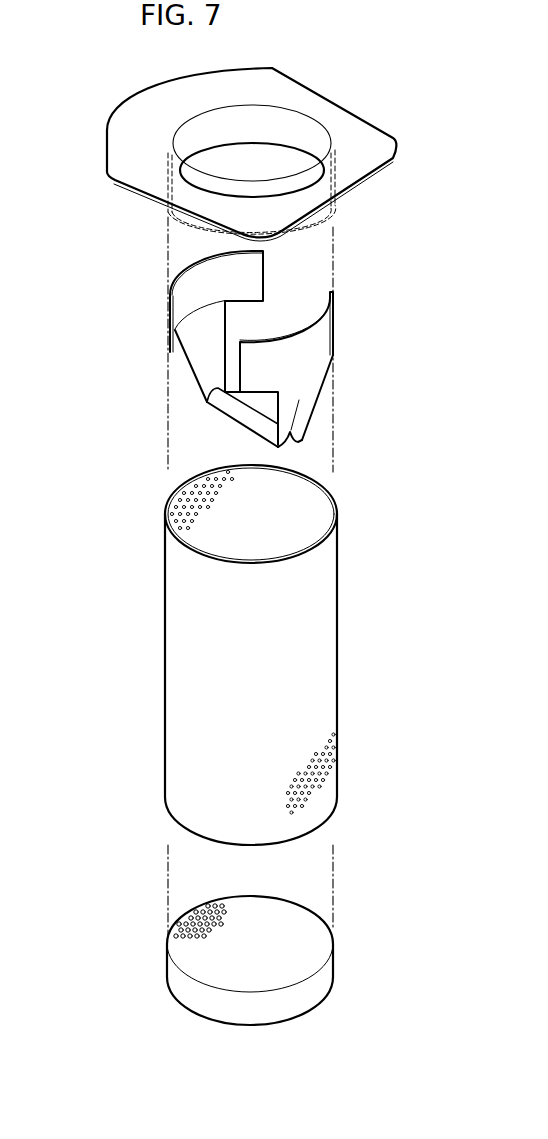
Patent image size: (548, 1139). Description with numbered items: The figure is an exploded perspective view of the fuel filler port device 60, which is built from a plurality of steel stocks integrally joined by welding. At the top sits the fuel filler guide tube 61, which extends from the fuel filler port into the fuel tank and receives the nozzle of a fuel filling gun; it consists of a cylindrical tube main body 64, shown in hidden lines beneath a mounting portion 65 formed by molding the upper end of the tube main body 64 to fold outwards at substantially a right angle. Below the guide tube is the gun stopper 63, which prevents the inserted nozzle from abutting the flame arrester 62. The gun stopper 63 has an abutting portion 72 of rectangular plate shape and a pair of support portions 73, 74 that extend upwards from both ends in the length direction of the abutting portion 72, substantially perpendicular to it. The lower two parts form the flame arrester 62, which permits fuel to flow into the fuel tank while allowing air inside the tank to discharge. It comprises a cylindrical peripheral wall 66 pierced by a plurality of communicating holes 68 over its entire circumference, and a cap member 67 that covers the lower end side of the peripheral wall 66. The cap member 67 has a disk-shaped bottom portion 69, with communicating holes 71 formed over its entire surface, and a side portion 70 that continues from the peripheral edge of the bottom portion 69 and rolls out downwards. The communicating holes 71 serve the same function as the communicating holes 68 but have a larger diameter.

The fuel filler port device 60 is at (53, 96).
The fuel filler guide tube 61 is at (275, 141).
The flame arrester 62 is at (319, 745).
The gun stopper 63 is at (263, 352).
The tube main body 64 is at (365, 180).
The mounting portion 65 is at (370, 135).
The peripheral wall 66 is at (301, 655).
The cap member 67 is at (302, 941).
The communicating holes 68 is at (327, 770).
The bottom portion 69 is at (308, 923).
The side portion 70 is at (327, 975).
The communicating holes 71 is at (225, 902).
The abutting portion 72 is at (245, 413).
The support portion 73 is at (200, 367).
The support portion 74 is at (303, 403).